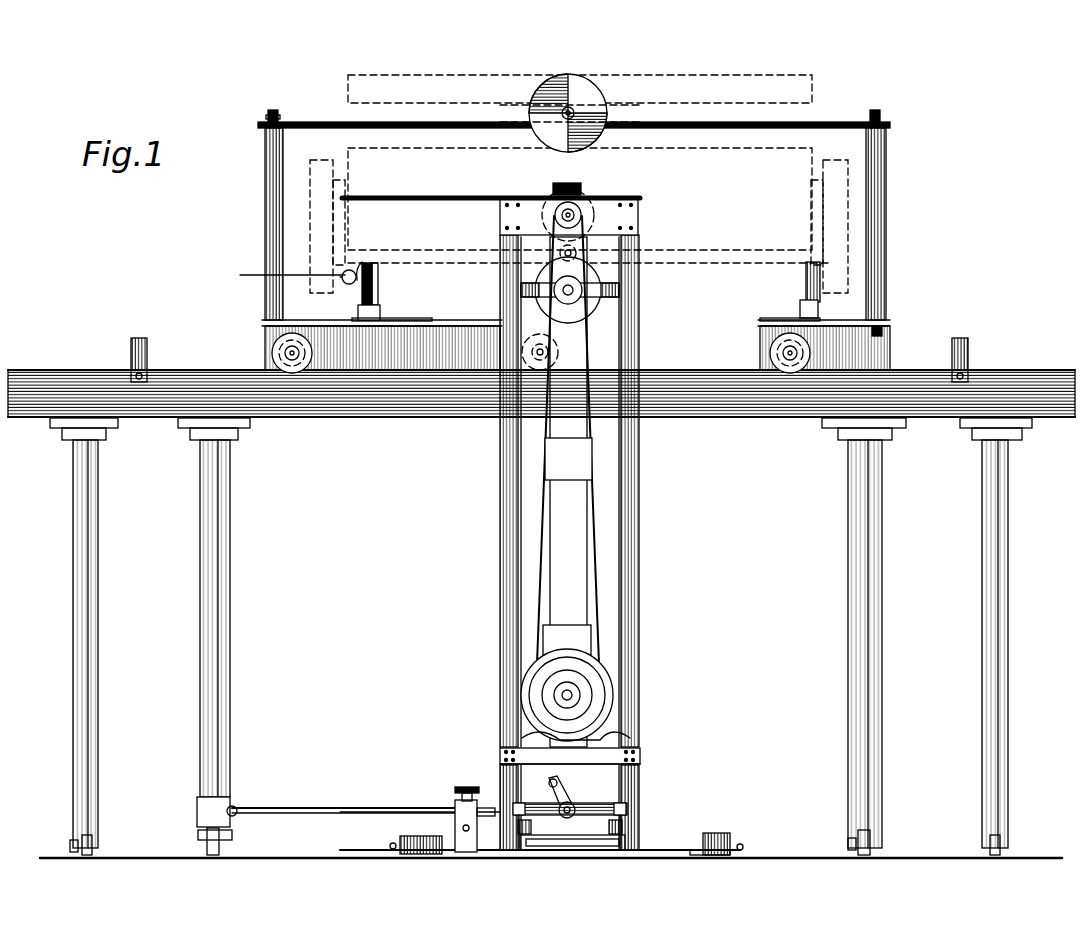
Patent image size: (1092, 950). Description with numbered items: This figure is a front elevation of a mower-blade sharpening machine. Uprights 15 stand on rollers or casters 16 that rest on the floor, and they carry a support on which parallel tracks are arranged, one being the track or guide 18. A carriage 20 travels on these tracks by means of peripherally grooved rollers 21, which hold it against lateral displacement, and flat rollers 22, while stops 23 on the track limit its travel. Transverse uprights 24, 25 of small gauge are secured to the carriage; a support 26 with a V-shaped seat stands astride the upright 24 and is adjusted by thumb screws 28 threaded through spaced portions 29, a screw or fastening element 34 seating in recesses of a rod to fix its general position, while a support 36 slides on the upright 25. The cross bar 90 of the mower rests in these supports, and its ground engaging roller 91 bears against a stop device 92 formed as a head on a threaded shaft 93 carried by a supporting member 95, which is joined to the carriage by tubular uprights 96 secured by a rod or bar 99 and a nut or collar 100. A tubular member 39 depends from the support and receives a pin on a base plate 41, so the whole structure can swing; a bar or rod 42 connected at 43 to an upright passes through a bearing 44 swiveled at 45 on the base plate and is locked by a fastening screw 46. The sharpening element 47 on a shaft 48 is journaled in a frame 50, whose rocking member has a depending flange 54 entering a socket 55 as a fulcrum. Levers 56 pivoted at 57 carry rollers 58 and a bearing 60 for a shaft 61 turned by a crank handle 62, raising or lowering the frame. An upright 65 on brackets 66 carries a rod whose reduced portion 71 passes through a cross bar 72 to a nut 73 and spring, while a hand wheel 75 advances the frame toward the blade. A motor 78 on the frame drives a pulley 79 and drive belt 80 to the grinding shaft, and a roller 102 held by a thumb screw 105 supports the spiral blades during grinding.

The uprights 15 is at (92, 648).
The rollers or casters 16 is at (100, 840).
The track or guide 18 is at (330, 418).
The carriage 20 is at (450, 338).
The peripherally grooved rollers 21 is at (300, 372).
The flat rollers 22 is at (522, 368).
The stops 23 is at (146, 358).
The upright 24 is at (380, 302).
The upright 25 is at (802, 306).
The support 26 is at (372, 280).
The thumb screws 28 is at (345, 284).
The spaced portions 29 is at (359, 268).
The screw or fastening element 34 is at (285, 275).
The support 36 is at (806, 282).
The tubular member 39 is at (584, 786).
The base plate or member 41 is at (392, 843).
The bar or rod 42 is at (322, 808).
The connection 43 is at (236, 804).
The bearing 44 is at (458, 802).
The swivel 45 is at (456, 820).
The fastening screw 46 is at (466, 786).
The sharpening element 47 is at (552, 196).
The shaft 48 is at (556, 216).
The frame 50 is at (640, 306).
The depending flange 54 is at (732, 842).
The socket or recess 55 is at (705, 834).
The levers 56 is at (522, 810).
The pivot 57 is at (536, 828).
The rollers 58 is at (398, 848).
The bearing 60 is at (605, 806).
The shaft 61 is at (576, 796).
The crank handle 62 is at (570, 756).
The upright 65 is at (573, 525).
The brackets 66 is at (575, 456).
The reduced portion 71 is at (582, 290).
The cross bar 72 is at (608, 300).
The nut 73 is at (570, 320).
The hand wheel 75 is at (545, 285).
The motor 78 is at (610, 685).
The pulley 79 is at (545, 698).
The drive belt 80 is at (592, 392).
The cross bar 90 is at (540, 105).
The ground engaging roller 91 is at (812, 90).
The stop device or head 92 is at (607, 108).
The threaded shaft 93 is at (548, 122).
The supporting member 95 is at (845, 130).
The uprights 96 is at (266, 175).
The rod or bar 99 is at (272, 122).
The nut or collar 100 is at (640, 212).
The roller 102 is at (640, 241).
The thumb screw 105 is at (580, 186).